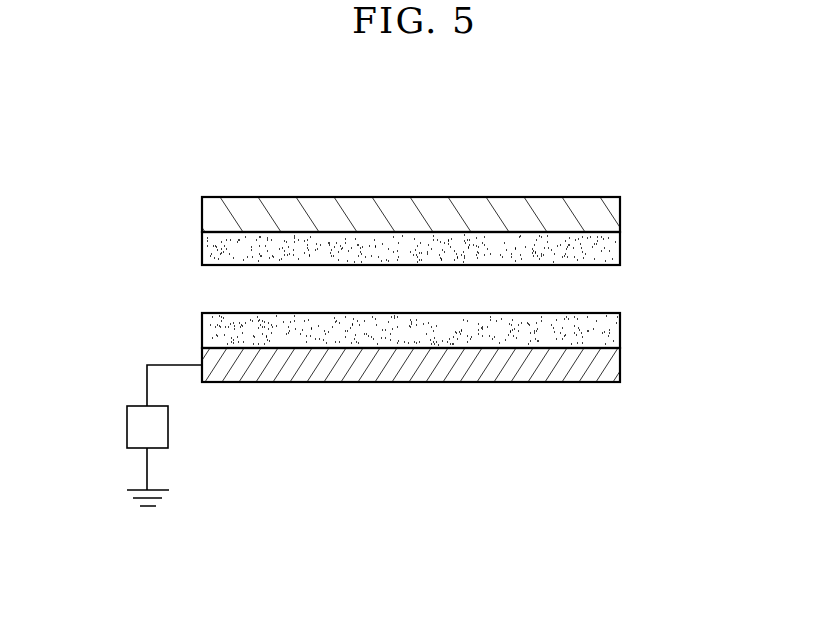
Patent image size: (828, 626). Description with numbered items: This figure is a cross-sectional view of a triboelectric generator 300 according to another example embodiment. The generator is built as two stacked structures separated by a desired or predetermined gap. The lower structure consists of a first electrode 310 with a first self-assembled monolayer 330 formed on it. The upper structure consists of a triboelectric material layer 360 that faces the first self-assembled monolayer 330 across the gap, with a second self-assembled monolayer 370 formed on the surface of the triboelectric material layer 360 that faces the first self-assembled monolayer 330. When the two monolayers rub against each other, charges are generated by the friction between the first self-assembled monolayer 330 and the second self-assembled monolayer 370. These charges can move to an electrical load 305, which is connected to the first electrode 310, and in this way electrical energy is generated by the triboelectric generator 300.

The triboelectric generator 300 is at (634, 175).
The electrical load 305 is at (127, 427).
The first electrode 310 is at (620, 365).
The first self-assembled monolayer 330 is at (620, 332).
The triboelectric material layer 360 is at (620, 215).
The second self-assembled monolayer 370 is at (620, 248).